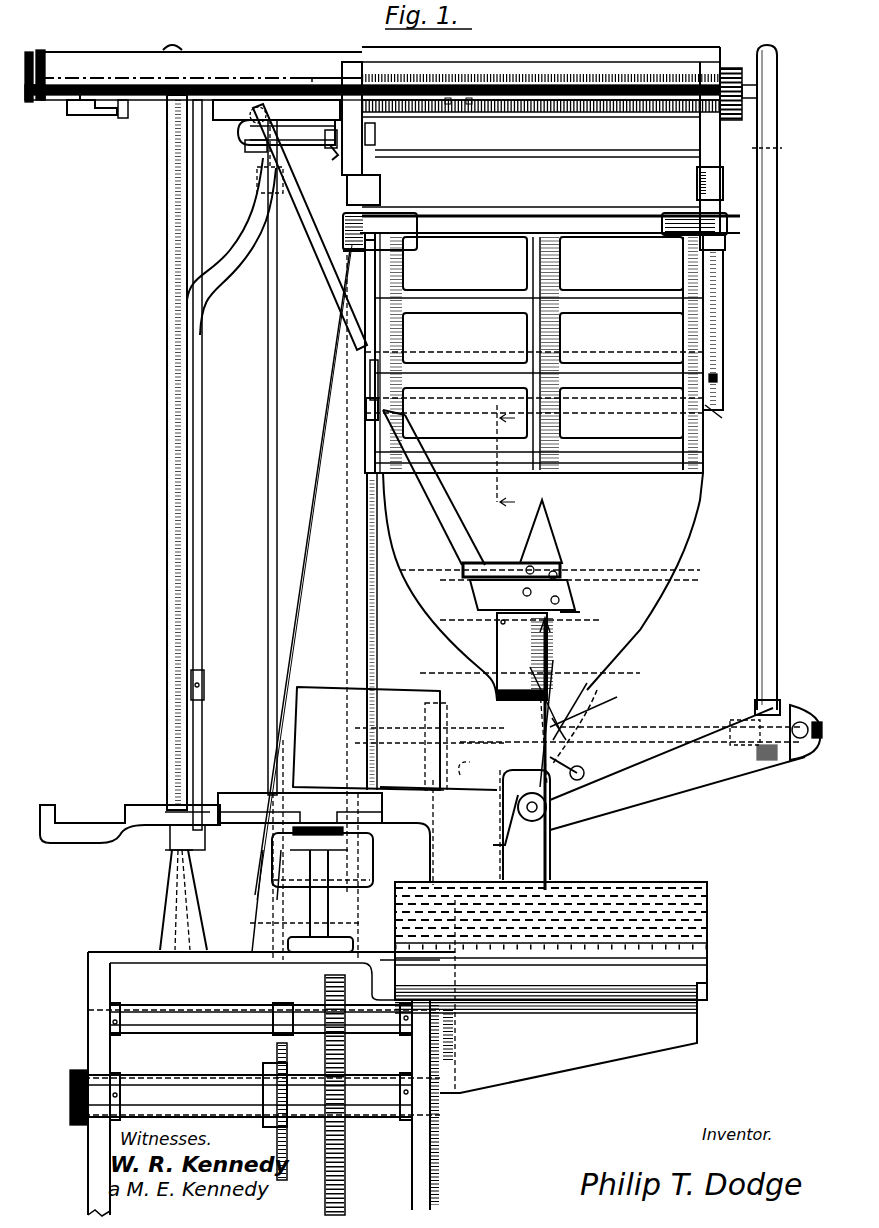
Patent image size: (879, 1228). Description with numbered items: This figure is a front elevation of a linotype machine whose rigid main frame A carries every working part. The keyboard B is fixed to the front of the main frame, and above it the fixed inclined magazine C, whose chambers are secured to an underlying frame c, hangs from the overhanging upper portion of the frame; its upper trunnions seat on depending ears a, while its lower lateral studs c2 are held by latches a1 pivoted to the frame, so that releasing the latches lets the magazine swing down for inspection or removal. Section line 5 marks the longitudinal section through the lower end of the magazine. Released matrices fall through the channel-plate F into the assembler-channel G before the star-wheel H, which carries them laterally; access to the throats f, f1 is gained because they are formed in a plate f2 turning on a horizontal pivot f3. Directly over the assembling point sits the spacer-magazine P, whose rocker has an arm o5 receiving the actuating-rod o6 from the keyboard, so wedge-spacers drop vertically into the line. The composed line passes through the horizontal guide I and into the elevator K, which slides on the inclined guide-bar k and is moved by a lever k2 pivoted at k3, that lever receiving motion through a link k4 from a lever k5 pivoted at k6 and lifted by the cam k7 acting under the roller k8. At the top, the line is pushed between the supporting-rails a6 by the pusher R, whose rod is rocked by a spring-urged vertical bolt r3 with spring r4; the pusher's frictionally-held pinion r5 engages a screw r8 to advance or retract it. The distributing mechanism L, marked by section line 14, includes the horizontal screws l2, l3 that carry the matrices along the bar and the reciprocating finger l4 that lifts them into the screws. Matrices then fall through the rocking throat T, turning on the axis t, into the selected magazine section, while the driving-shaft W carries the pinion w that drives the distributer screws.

The section line 14 14 is at (32, 68).
The main frame A is at (248, 58).
The distributing mechanism L is at (270, 83).
The driving-shaft W is at (752, 75).
The pinion w is at (731, 67).
The rocking throat T is at (541, 121).
The horizontal screw l2 is at (448, 102).
The horizontal screw l3 is at (470, 102).
The vertically-reciprocating finger l4 is at (372, 134).
The horizontal axis t is at (700, 150).
The underlying frame c is at (343, 228).
The depending ears a is at (340, 262).
The vertical bolt r3 is at (45, 100).
The pusher R is at (95, 112).
The spring r4 is at (125, 108).
The screw r8 is at (160, 100).
The supporting-rails a6 is at (276, 145).
The pivot k3 is at (243, 136).
The horizontal pinion r5 is at (332, 142).
The inclined guide-bar k is at (172, 590).
The lever k2 is at (197, 490).
The link k4 is at (268, 613).
The fixed inclined magazine C is at (534, 353).
The lateral studs c2 is at (378, 420).
The latches a1 is at (380, 442).
The section line 5 5 is at (497, 458).
The channel-plate F is at (625, 525).
The spacer-magazine P is at (523, 751).
The arm o5 is at (575, 612).
The actuating-rod o6 is at (556, 652).
The throat f is at (586, 682).
The throat f1 is at (538, 722).
The plate f2 is at (565, 712).
The horizontal pivot f3 is at (585, 774).
The star-wheel H is at (560, 798).
The assembler-channel G is at (504, 821).
The horizontal guide I is at (328, 798).
The elevator K is at (157, 790).
The keyboard B is at (708, 918).
The lever k5 is at (275, 1015).
The pivot k6 is at (150, 1006).
The lifting-cam k7 is at (268, 1060).
The stud or roller k8 is at (296, 1092).